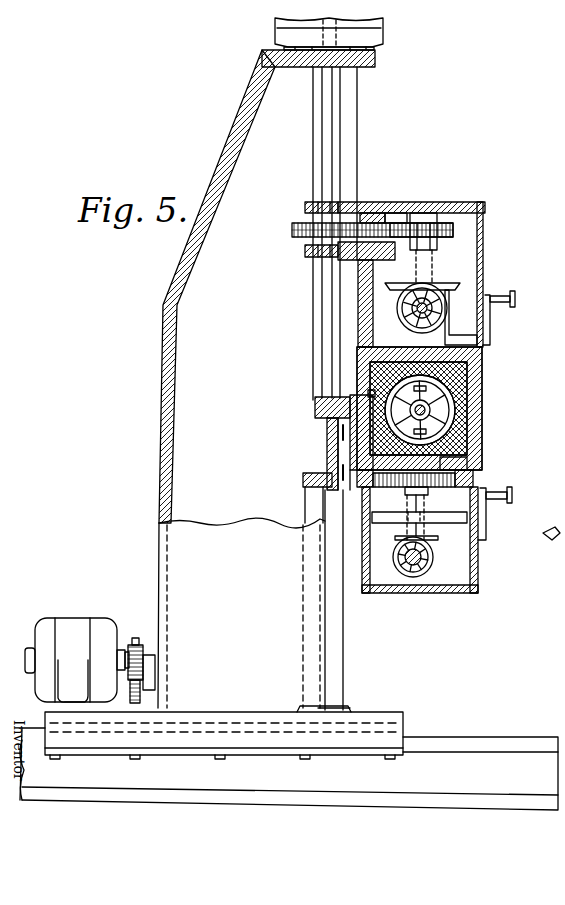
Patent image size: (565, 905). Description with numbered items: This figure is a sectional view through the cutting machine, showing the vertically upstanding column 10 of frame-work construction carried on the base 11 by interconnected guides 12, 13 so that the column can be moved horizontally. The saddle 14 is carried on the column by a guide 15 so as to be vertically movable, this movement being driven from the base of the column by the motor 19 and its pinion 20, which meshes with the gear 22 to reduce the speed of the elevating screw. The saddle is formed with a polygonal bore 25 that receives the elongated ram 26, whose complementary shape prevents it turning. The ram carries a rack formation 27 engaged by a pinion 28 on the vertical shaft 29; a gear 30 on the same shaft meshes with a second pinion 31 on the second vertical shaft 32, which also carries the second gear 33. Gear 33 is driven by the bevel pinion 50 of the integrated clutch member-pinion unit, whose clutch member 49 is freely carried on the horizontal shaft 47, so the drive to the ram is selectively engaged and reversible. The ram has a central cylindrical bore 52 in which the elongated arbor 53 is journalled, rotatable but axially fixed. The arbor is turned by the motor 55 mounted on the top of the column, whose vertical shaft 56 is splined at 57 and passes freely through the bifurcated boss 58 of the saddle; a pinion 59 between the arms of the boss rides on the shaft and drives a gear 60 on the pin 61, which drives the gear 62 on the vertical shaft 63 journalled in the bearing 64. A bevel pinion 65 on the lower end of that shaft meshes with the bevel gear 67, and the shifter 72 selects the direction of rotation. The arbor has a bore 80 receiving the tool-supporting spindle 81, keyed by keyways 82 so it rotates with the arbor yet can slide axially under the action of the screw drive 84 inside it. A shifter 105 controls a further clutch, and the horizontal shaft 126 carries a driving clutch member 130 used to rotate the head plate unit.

The column 10 is at (178, 555).
The base 11 is at (289, 769).
The guide 12 is at (386, 714).
The guide 13 is at (476, 740).
The saddle 14 is at (482, 410).
The guide 15 is at (335, 650).
The motor 19 is at (62, 625).
The pinion 20 is at (128, 650).
The gear 22 is at (136, 640).
The bore 25 is at (482, 370).
The ram 26 is at (482, 428).
The rack formation 27 is at (363, 398).
The pinion 28 is at (315, 410).
The vertical shaft 29 is at (338, 445).
The gear 30 is at (303, 480).
The second pinion 31 is at (398, 488).
The second vertical shaft 32 is at (424, 503).
The second gear 33 is at (398, 540).
The horizontal shaft 47 is at (413, 572).
The clutch member 49 is at (426, 570).
The bevel pinion 50 is at (400, 573).
The cylindrical bore 52 is at (440, 452).
The arbor 53 is at (470, 462).
The motor 55 is at (376, 40).
The shaft 56 is at (338, 125).
The spline 57 is at (338, 160).
The bifurcated boss 58 is at (305, 207).
The pinion 59 is at (292, 229).
The gear 60 is at (375, 222).
The pin 61 is at (395, 222).
The gear 62 is at (453, 230).
The vertical shaft 63 is at (437, 262).
The bearing 64 is at (437, 248).
The bevel pinion 65 is at (460, 284).
The bevel gear 67 is at (445, 300).
The shifter 72 is at (490, 318).
The cylindrical bore 80 is at (470, 392).
The tool-supporting spindle 81 is at (368, 395).
The keyways 82 is at (482, 383).
The screw drive 84 is at (482, 420).
The shifter 105 is at (487, 520).
The horizontal shaft 126 is at (415, 312).
The driving clutch member 130 is at (412, 305).